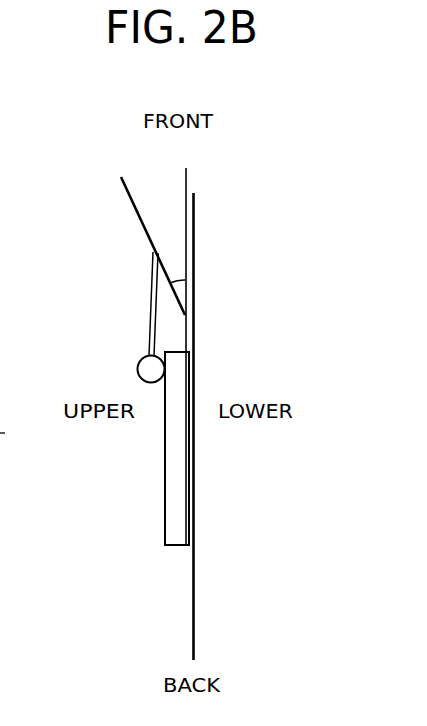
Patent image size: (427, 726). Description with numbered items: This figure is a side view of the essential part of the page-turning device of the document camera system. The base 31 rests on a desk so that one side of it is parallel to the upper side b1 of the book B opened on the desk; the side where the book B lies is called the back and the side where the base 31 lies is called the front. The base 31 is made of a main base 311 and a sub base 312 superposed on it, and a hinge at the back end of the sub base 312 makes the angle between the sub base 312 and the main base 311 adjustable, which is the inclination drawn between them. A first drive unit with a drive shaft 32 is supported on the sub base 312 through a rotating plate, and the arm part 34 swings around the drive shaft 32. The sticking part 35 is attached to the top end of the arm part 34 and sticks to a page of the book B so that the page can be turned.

The base 31 is at (194, 175).
The main base 311 is at (185, 222).
The sub base 312 is at (98, 246).
The drive shaft 32 is at (133, 203).
The arm part 34 is at (150, 313).
The sticking part 35 is at (142, 359).
The upper side of the book b1 is at (189, 352).
The book B is at (149, 553).